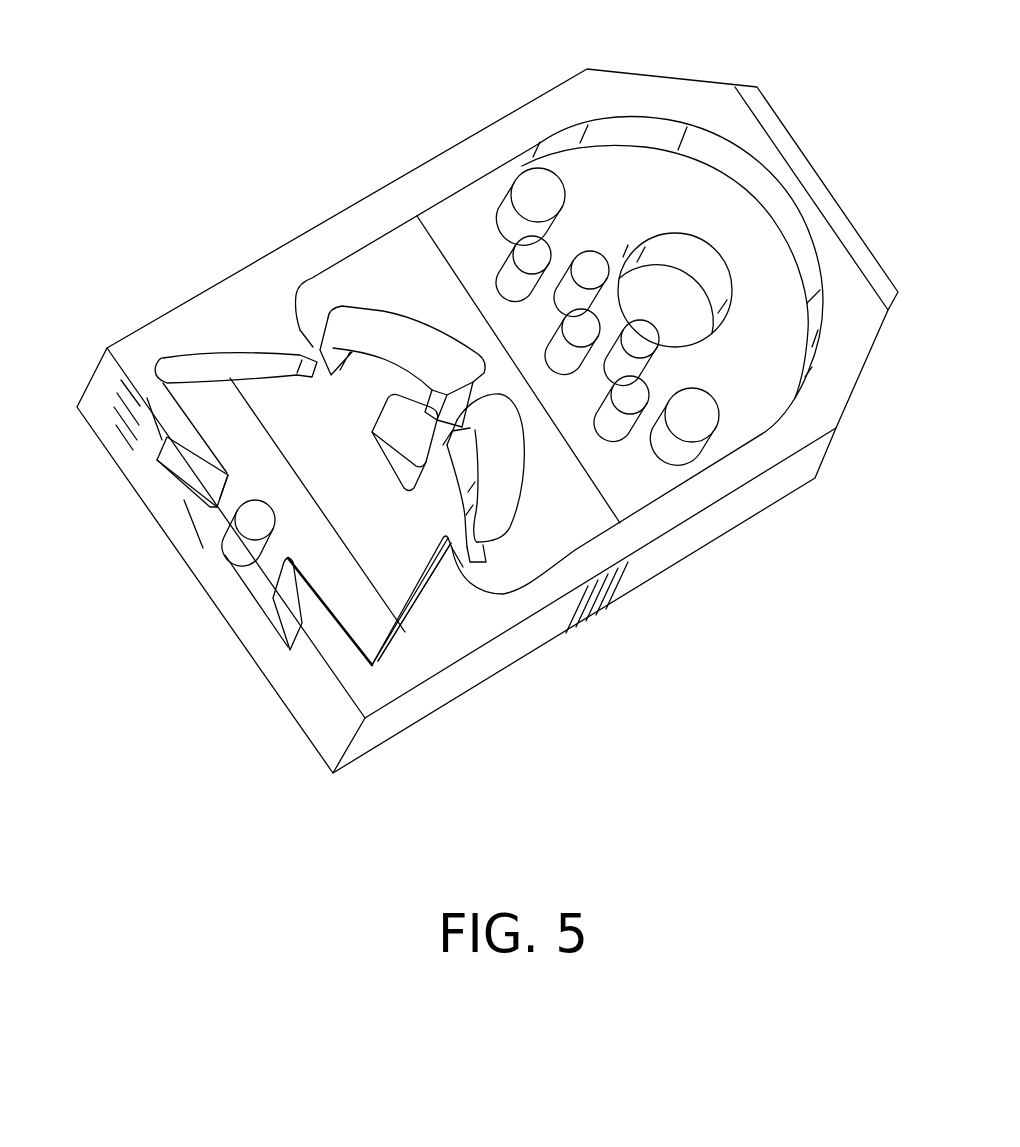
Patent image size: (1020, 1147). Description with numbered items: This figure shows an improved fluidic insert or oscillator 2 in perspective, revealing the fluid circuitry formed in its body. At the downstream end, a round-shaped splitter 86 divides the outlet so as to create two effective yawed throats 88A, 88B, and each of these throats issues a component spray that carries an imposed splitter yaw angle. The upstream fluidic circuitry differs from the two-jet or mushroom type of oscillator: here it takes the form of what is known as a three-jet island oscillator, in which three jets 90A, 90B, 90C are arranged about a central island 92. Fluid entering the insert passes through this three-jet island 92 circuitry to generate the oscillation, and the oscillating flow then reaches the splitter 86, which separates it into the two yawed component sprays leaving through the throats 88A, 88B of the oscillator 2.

The fluidic insert or oscillator 2 is at (303, 132).
The splitter 86 is at (258, 514).
The yawed throat 88A is at (218, 518).
The yawed throat 88B is at (266, 573).
The jet 90A is at (463, 548).
The jet 90B is at (447, 430).
The jet 90C is at (321, 349).
The island 92 is at (410, 418).